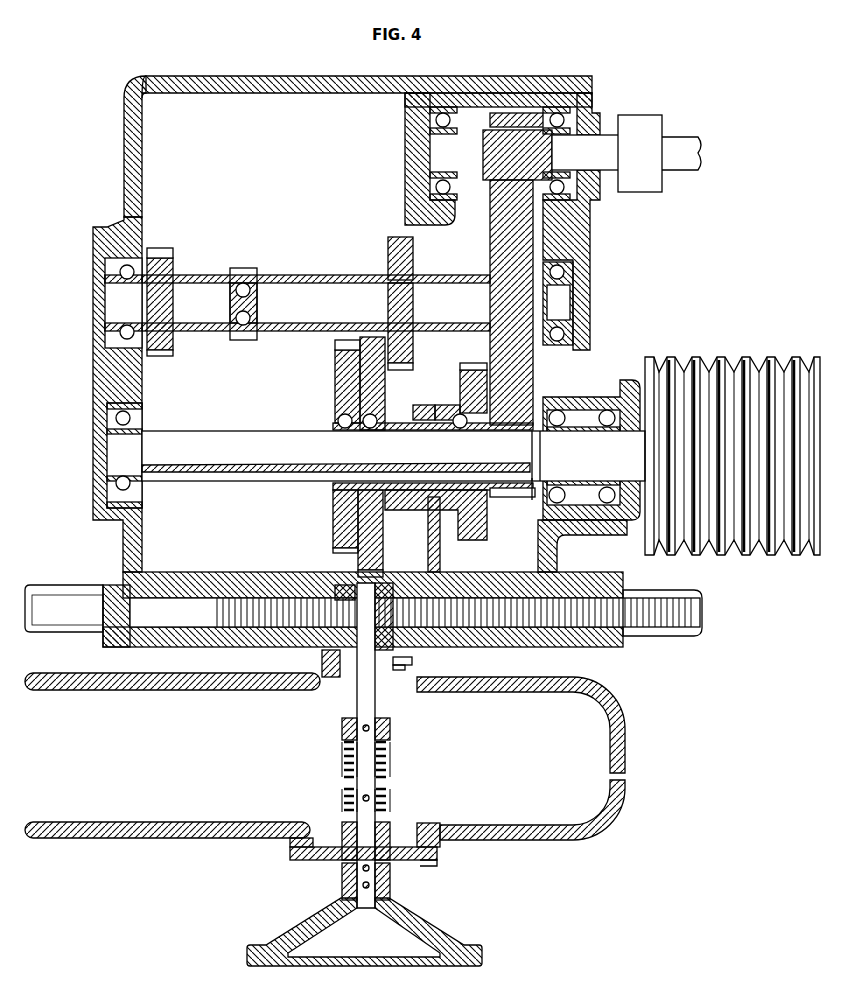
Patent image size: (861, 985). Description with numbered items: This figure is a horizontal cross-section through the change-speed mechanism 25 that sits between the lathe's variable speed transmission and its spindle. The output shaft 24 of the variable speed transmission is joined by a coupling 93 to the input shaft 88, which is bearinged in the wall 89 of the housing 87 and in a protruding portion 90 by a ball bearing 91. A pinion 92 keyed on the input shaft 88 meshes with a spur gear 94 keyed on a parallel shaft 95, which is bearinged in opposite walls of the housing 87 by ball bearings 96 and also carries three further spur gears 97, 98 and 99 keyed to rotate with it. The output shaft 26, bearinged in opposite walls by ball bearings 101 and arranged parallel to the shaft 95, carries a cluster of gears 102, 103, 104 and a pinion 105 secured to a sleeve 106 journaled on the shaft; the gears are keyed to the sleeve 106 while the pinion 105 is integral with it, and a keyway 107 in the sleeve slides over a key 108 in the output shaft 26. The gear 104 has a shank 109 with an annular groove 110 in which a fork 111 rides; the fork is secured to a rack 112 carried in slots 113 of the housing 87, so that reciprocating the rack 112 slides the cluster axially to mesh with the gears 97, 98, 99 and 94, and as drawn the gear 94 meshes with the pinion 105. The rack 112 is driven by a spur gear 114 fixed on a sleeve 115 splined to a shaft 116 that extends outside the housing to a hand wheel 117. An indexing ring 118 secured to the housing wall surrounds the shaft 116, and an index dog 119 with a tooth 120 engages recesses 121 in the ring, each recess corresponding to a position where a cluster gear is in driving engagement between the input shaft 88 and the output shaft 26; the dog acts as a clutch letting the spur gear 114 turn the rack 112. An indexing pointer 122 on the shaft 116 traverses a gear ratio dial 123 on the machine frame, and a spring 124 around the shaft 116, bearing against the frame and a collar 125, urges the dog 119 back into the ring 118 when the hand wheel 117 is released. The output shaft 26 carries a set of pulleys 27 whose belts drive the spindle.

The output shaft of the variable speed transmission 24 is at (700, 156).
The change-speed mechanism 25 is at (122, 130).
The output shaft 26 is at (630, 469).
The set of pulleys 27 is at (768, 548).
The housing 87 is at (262, 70).
The input shaft 88 is at (606, 132).
The wall 89 is at (570, 235).
The bearing support block 90 is at (408, 213).
The ball bearing 91 is at (450, 121).
The pinion 92 is at (515, 114).
The coupling 93 is at (648, 118).
The spur gear 94 is at (492, 209).
The shaft 95 is at (560, 298).
The ball bearings 96 is at (125, 272).
The spur gear 97 is at (158, 256).
The spur gear 98 is at (243, 270).
The spur gear 99 is at (413, 242).
The ball bearings 101 is at (129, 418).
The gear 102 is at (337, 356).
The gear 103 is at (385, 386).
The gear 104 is at (465, 372).
The pinion 105 is at (510, 498).
The sleeve 106 is at (337, 421).
The keyway 107 is at (532, 501).
The key 108 is at (282, 480).
The shank 109 is at (420, 406).
The annular groove 110 is at (445, 406).
The fork 111 is at (428, 542).
The rack 112 is at (686, 630).
The slots 113 is at (195, 595).
The spur gear 114 is at (386, 598).
The sleeve 115 is at (355, 592).
The shaft 116 is at (375, 706).
The hand wheel 117 is at (478, 950).
The indexing ring 118 is at (412, 660).
The index dog 119 is at (357, 693).
The tooth 120 is at (322, 656).
The recesses 121 is at (407, 675).
The lower nut 122 is at (344, 874).
The gear ratio dial 123 is at (432, 862).
The spring 124 is at (390, 752).
The collar 125 is at (390, 727).